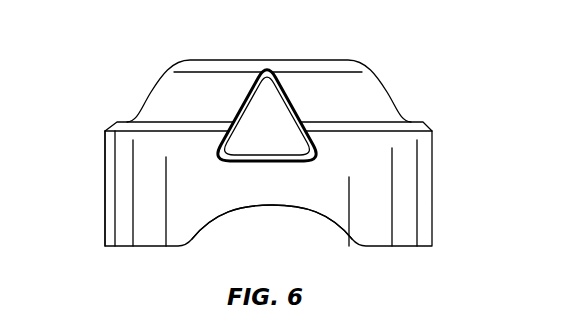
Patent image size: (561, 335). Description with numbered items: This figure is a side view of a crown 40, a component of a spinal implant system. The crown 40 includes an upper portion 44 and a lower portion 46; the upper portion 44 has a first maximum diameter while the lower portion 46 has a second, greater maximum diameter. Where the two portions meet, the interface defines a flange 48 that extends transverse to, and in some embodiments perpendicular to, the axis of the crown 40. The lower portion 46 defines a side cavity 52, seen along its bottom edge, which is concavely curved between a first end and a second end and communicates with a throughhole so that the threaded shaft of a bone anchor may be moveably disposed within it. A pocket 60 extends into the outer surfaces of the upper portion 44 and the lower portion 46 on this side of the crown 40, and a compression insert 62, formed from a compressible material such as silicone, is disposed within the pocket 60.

The crown 40 is at (408, 207).
The upper portion 44 is at (177, 92).
The lower portion 46 is at (105, 213).
The flange 48 is at (410, 121).
The side cavity 52 is at (273, 222).
The pocket 60 is at (303, 93).
The compression insert 62 is at (267, 105).